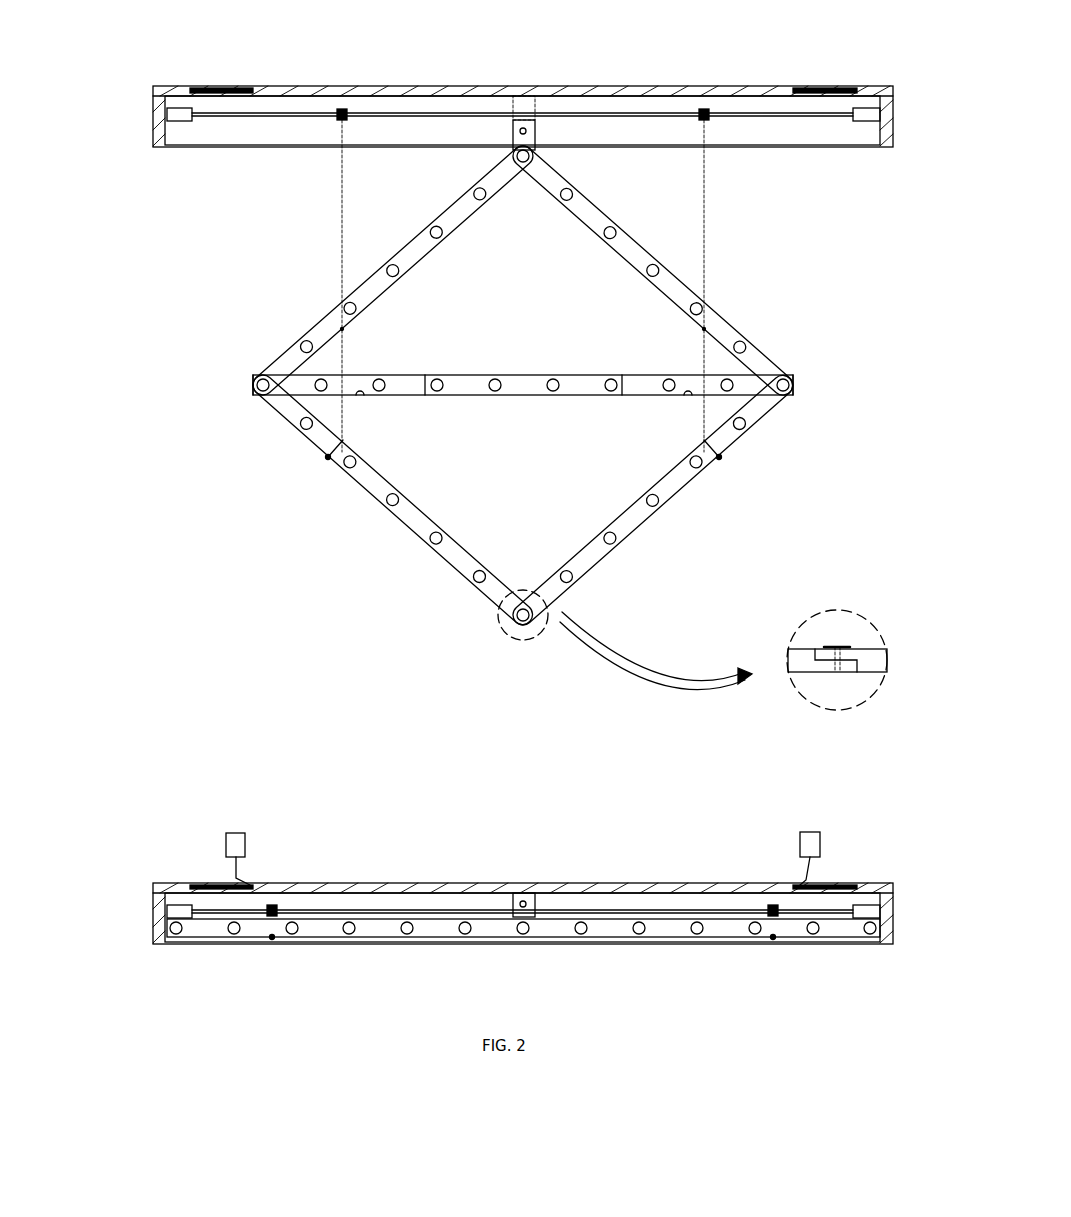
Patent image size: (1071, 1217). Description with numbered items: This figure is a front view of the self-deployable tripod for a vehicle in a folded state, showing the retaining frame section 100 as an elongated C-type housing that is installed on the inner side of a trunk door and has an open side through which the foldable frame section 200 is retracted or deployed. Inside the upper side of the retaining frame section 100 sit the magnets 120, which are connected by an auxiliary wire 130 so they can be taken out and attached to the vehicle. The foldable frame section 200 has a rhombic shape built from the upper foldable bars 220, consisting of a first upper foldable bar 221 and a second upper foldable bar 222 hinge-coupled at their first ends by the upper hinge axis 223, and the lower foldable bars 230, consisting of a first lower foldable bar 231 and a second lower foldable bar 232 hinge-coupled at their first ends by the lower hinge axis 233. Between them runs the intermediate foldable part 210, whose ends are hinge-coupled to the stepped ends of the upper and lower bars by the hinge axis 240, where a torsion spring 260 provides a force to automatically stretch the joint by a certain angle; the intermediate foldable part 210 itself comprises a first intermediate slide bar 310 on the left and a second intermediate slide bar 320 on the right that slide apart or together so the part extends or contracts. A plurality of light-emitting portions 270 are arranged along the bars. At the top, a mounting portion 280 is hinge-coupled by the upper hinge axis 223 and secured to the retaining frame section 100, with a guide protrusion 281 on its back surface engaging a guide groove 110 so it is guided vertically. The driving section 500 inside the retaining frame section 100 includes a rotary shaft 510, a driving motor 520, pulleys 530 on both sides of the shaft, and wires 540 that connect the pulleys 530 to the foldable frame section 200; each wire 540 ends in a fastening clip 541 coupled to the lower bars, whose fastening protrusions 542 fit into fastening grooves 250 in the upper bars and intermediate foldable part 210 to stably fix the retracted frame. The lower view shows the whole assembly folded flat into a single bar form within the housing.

The retaining frame section 100 is at (140, 117).
The guide groove 110 is at (522, 98).
The magnet 120 is at (196, 88).
The auxiliary wire 130 is at (240, 88).
The foldable frame section 200 is at (238, 278).
The intermediate foldable part 210 is at (478, 396).
The upper foldable bars 220 is at (512, 271).
The first upper foldable bar 221 is at (323, 328).
The second upper foldable bar 222 is at (668, 280).
The upper hinge axis 223 is at (535, 156).
The lower foldable bars 230 is at (597, 521).
The first lower foldable bar 231 is at (447, 566).
The second lower foldable bar 232 is at (610, 546).
The lower hinge axis 233 is at (525, 625).
The hinge axis 240 is at (255, 385).
The fastening grooves 250 is at (342, 329).
The torsion spring 260 is at (262, 372).
The light-emitting portions 270 is at (425, 548).
The mounting portion 280 is at (535, 135).
The guide protrusion 281 is at (525, 130).
The first intermediate slide bar 310 is at (515, 375).
The second intermediate slide bar 320 is at (645, 375).
The driving section 500 is at (846, 222).
The rotary shaft 510 is at (758, 117).
The driving motor 520 is at (893, 113).
The pulley 530 is at (708, 118).
The wire 540 is at (706, 200).
The fastening clip 541 is at (330, 450).
The fastening protrusions 542 is at (328, 460).